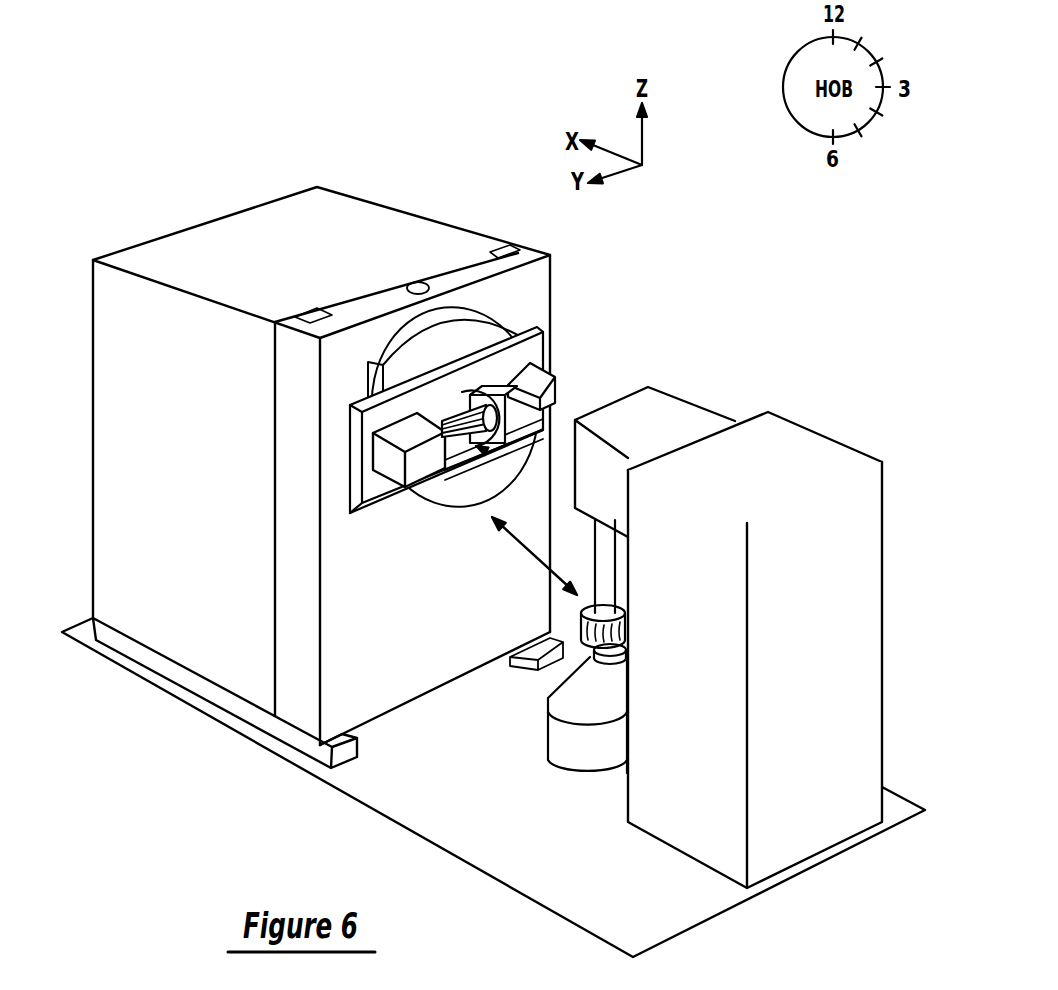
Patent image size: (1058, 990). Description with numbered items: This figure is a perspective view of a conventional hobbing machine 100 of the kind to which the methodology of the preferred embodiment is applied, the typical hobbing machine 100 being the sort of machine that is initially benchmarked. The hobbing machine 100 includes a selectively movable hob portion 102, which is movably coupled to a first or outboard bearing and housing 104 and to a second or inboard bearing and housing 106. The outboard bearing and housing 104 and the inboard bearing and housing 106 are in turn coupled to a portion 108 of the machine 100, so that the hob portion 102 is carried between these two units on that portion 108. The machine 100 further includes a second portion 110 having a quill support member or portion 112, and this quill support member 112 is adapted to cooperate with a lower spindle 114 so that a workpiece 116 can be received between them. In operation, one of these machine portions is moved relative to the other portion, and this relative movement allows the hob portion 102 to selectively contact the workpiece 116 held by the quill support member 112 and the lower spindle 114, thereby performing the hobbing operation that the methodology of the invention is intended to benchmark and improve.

The hobbing machine 100 is at (737, 272).
The hob portion 102 is at (462, 416).
The first or outboard bearing and housing 104 is at (424, 470).
The second or inboard bearing and housing 106 is at (540, 397).
The portion of machine 108 is at (328, 477).
The second portion 110 is at (755, 650).
The quill support member 112 is at (683, 418).
The lower spindle 114 is at (560, 733).
The workpiece 116 is at (583, 614).